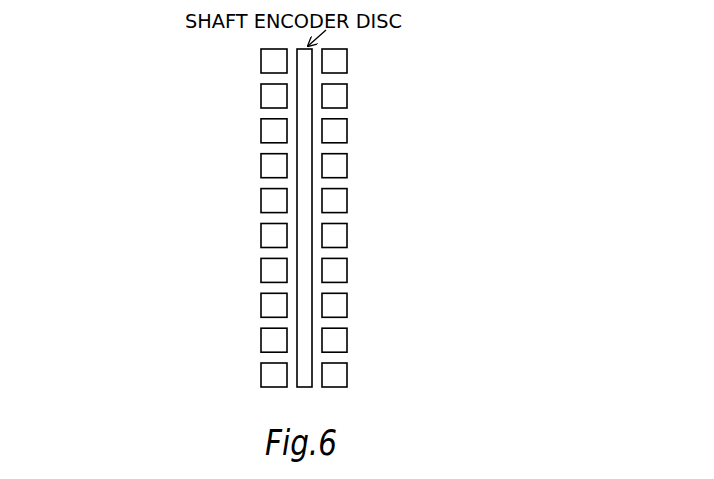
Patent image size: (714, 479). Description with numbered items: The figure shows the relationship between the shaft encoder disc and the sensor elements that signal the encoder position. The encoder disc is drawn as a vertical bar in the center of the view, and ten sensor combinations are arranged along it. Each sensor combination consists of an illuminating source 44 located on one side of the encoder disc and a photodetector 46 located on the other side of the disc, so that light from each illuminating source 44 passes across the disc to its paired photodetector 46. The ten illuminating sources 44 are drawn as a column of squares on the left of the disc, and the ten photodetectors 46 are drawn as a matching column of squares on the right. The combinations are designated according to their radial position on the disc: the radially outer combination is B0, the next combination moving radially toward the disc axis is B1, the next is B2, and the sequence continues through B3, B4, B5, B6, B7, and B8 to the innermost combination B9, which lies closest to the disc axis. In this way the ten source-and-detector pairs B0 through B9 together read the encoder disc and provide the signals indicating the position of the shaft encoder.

The illuminating source 44 is at (256, 366).
The photodetector 46 is at (467, 218).
The radially outer sensor combination B0 is at (355, 61).
The sensor combination B1 is at (355, 96).
The sensor combination B2 is at (355, 131).
The sensor combination B3 is at (355, 166).
The sensor combination B4 is at (355, 201).
The sensor combination B5 is at (355, 236).
The sensor combination B6 is at (355, 270).
The sensor combination B7 is at (355, 305).
The sensor combination B8 is at (355, 340).
The sensor combination B9 is at (355, 375).